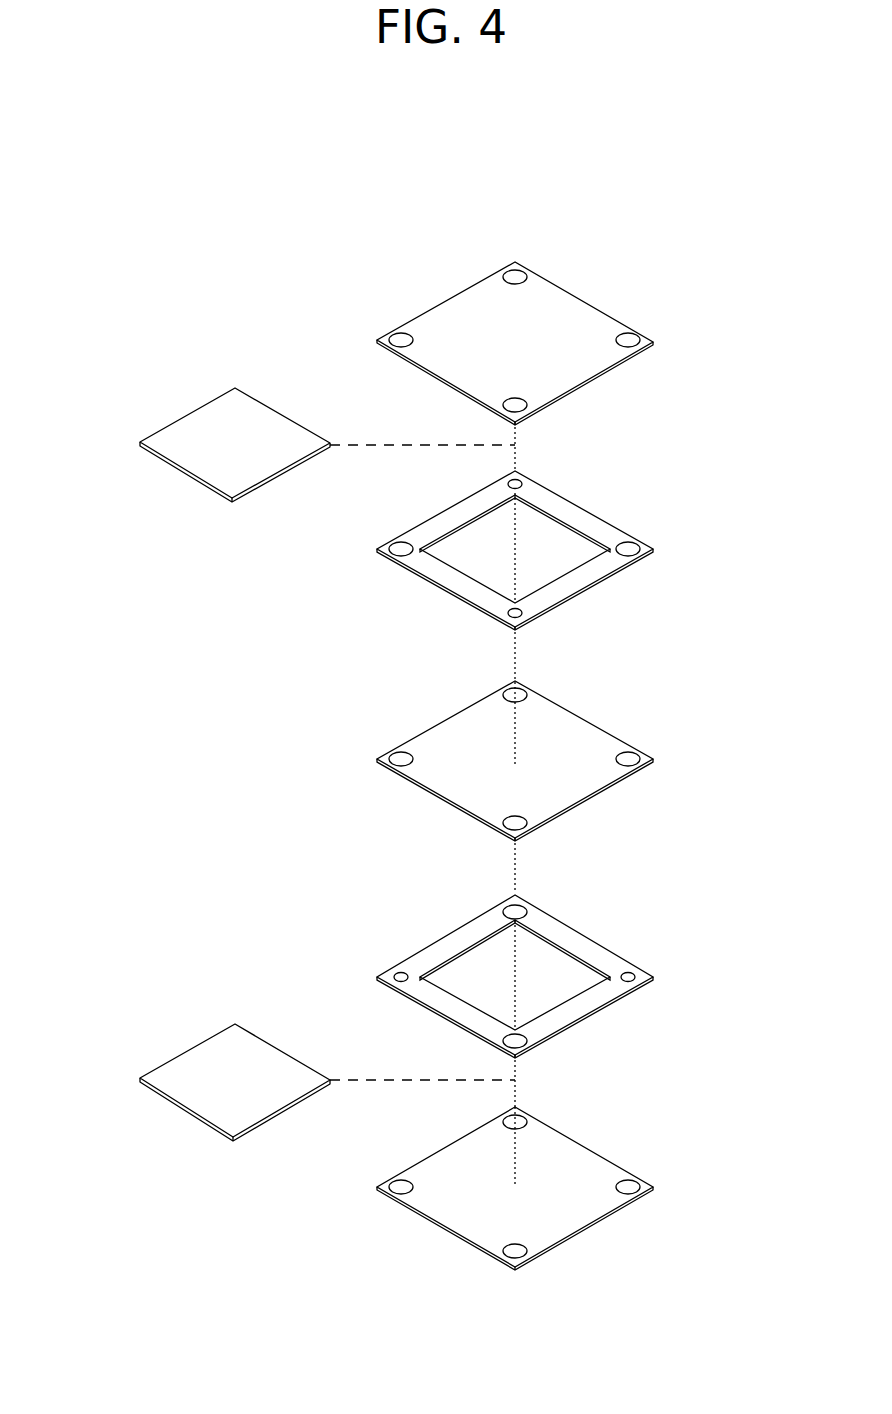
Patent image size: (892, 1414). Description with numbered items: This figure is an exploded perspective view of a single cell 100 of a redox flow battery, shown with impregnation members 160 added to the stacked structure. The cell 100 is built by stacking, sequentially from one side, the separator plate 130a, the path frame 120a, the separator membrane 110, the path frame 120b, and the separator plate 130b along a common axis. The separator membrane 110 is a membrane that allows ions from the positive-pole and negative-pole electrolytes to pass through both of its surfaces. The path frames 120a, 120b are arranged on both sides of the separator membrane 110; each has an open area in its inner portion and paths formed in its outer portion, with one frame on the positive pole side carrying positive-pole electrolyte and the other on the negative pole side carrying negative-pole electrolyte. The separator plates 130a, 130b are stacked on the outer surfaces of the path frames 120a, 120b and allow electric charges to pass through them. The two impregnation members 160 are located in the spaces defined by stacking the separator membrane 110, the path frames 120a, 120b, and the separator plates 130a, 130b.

The cell 100 is at (808, 196).
The separator membrane 110 is at (580, 757).
The path frame 120a is at (588, 1003).
The path frame 120b is at (590, 577).
The separator plate 130a is at (588, 1207).
The separator plate 130b is at (588, 355).
The impregnation member 160 is at (183, 448).